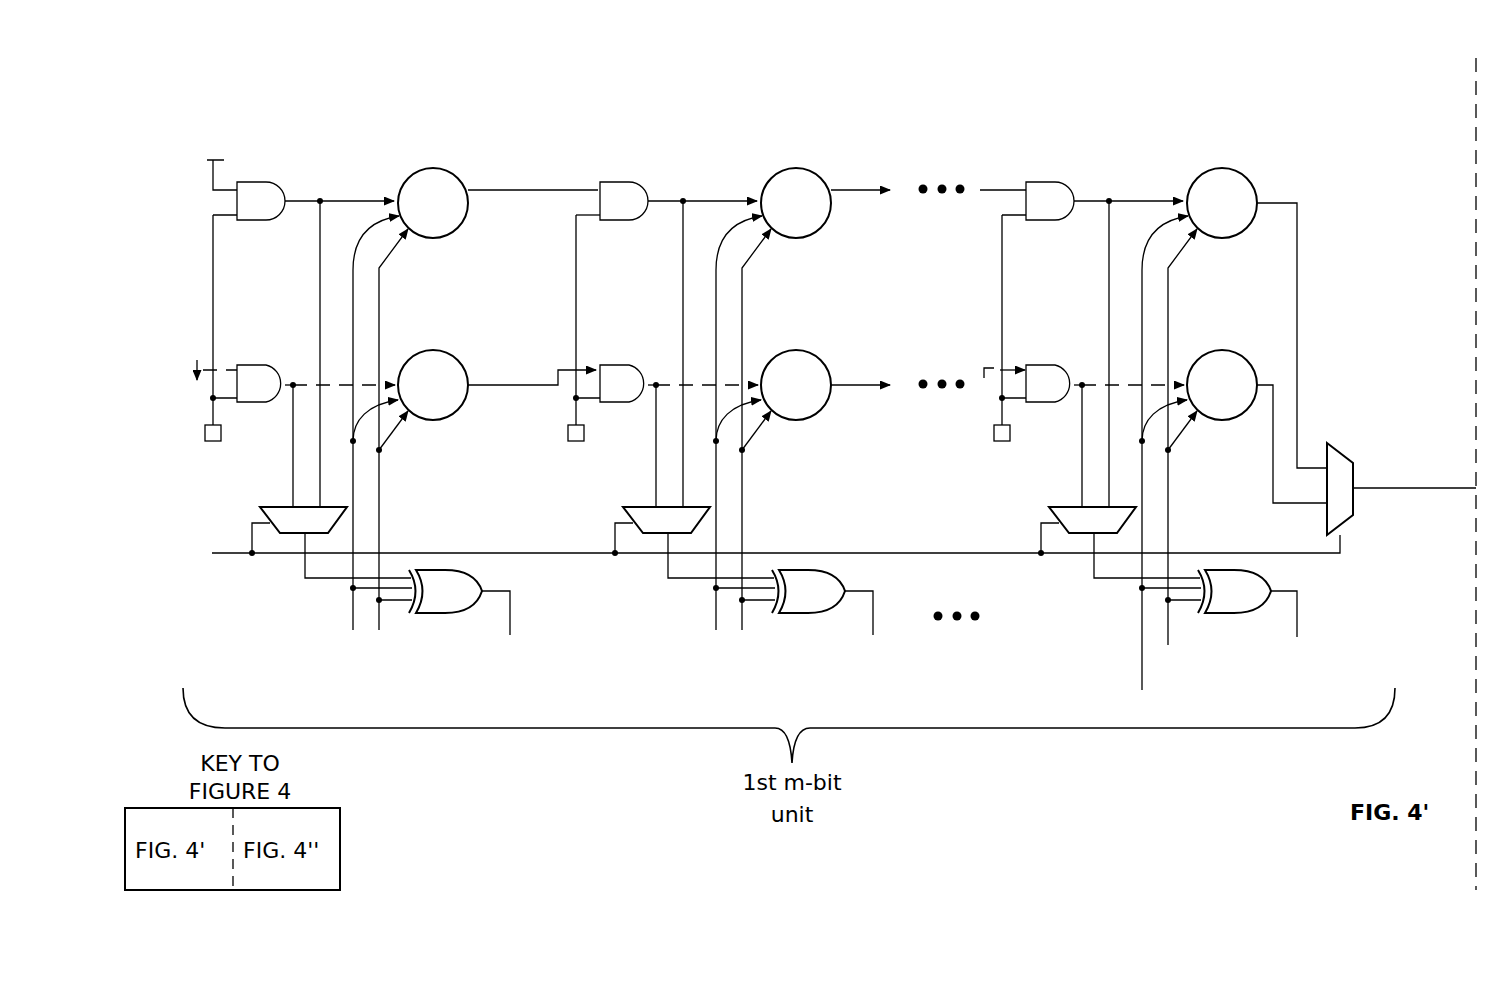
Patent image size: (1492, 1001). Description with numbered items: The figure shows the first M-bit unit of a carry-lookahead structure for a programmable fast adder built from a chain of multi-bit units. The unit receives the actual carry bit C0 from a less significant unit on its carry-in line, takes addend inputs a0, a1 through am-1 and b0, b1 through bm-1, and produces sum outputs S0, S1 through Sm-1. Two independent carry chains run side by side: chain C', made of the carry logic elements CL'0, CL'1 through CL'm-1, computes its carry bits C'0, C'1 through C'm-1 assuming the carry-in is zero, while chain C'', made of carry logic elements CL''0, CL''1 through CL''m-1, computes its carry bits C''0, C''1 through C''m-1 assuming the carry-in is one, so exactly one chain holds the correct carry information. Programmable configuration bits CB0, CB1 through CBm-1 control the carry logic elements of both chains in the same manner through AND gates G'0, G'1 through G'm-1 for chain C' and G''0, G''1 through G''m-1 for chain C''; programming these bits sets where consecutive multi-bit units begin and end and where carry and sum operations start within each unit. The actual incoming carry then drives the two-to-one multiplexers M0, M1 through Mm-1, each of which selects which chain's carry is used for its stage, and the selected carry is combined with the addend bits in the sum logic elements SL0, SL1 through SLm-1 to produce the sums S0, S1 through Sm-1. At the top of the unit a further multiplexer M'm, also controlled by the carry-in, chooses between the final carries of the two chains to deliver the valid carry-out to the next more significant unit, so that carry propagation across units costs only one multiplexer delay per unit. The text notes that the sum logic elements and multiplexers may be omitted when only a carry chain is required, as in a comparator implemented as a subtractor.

The AND gate G''0 is at (246, 186).
The carry bit of chain C'' C''0 is at (339, 336).
The carry logic element CL''0 is at (498, 187).
The AND gate G'0 is at (239, 369).
The carry bit of chain C' C'0 is at (339, 428).
The carry logic element CL'0 is at (497, 371).
The configuration bit CB0 is at (221, 352).
The 2-to-1 multiplexer M0 is at (326, 551).
The addend input b0 is at (374, 440).
The addend input a0 is at (392, 445).
The sum logic element SL0 is at (445, 614).
The sum output S0 is at (501, 633).
The carry bit C0 is at (762, 557).
The AND gate G''1 is at (612, 186).
The carry bit of chain C'' C''1 is at (702, 336).
The carry logic element CL''1 is at (825, 187).
The AND gate G'1 is at (621, 369).
The carry bit of chain C' C'1 is at (702, 428).
The carry logic element CL'1 is at (825, 371).
The configuration bit CB1 is at (584, 352).
The 2-to-1 multiplexer M1 is at (689, 551).
The addend input b1 is at (737, 440).
The addend input a1 is at (755, 445).
The sum logic element SL1 is at (808, 614).
The sum output S1 is at (864, 633).
The AND gate G''m-1 is at (1027, 183).
The carry bit of chain C'' C''m-1 is at (1128, 331).
The carry logic element CL''m-1 is at (1252, 300).
The AND gate G'm-1 is at (993, 373).
The carry bit of chain C' C'm-1 is at (1106, 413).
The carry logic element CL'm-1 is at (1254, 411).
The configuration bit CBm-1 is at (988, 343).
The 2-to-1 multiplexer Mm-1 is at (1105, 551).
The addend input bm-1 is at (1161, 464).
The addend input am-1 is at (1184, 456).
The sum logic element SLm-1 is at (1234, 614).
The sum output Sm-1 is at (1303, 636).
The 2-to-1 multiplexer M'm is at (1401, 489).